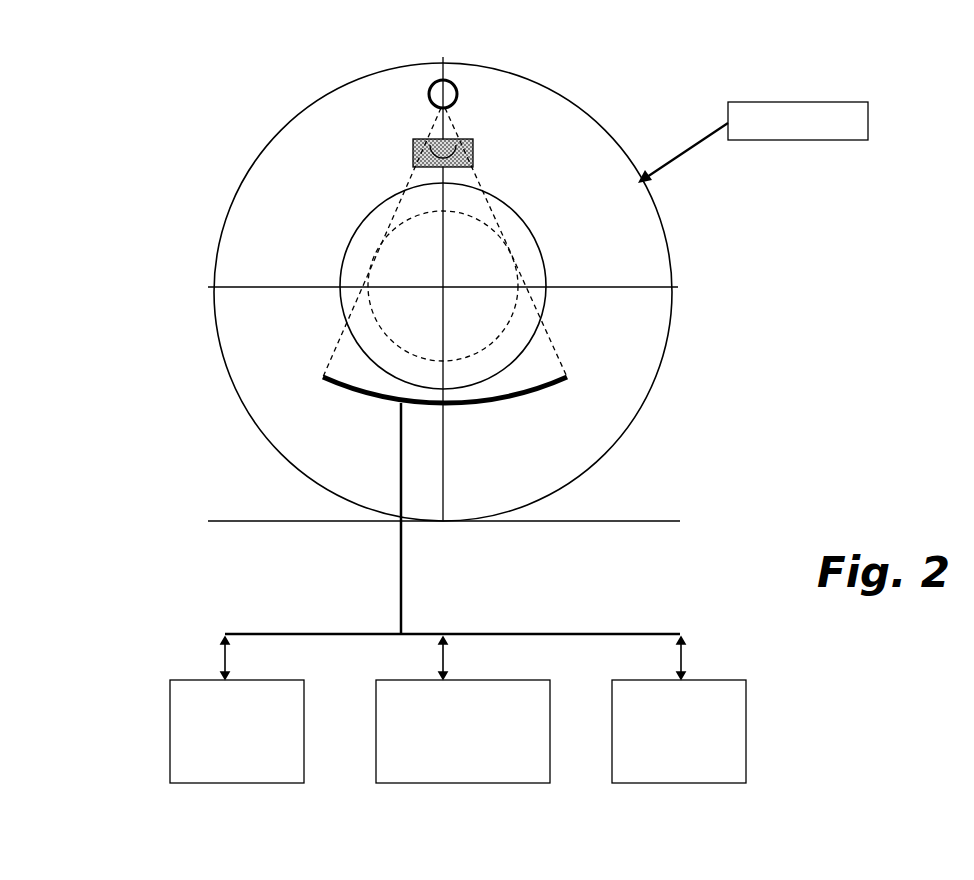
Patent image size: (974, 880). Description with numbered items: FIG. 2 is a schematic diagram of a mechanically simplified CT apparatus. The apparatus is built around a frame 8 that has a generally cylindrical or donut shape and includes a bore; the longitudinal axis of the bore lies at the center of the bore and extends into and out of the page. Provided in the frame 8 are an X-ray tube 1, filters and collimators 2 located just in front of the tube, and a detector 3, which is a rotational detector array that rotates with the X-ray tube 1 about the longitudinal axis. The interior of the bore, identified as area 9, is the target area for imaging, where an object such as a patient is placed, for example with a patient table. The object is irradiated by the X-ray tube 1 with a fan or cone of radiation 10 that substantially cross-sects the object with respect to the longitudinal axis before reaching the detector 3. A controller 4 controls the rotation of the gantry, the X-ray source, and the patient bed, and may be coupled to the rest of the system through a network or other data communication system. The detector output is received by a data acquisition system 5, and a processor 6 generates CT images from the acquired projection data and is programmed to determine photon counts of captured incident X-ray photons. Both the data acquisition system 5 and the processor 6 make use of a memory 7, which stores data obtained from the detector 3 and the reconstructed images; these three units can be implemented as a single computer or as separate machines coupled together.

The X-ray tube 1 is at (453, 83).
The filters and collimators 2 is at (473, 147).
The detector 3 is at (567, 377).
The controller 4 is at (832, 143).
The data acquisition system 5 is at (238, 783).
The processor 6 is at (487, 783).
The memory 7 is at (704, 784).
The frame 8 is at (242, 188).
The area 9 is at (375, 318).
The fan or cone of radiation 10 is at (332, 353).